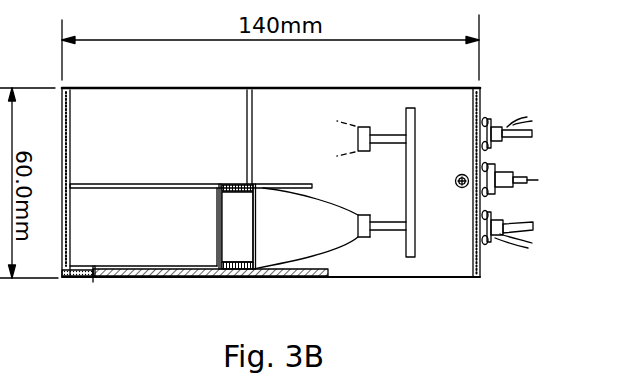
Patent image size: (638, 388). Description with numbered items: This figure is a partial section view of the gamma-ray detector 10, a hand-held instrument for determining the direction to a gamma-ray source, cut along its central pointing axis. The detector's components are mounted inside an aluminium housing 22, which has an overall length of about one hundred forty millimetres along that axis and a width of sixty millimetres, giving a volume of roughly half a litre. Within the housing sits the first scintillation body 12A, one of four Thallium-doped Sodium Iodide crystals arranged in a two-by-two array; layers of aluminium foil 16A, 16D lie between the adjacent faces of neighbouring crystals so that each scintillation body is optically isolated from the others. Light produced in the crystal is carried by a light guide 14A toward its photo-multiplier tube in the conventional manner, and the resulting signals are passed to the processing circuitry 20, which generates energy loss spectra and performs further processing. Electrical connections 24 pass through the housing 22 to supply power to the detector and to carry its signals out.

The gamma-ray detector 10 is at (394, 295).
The first scintillation body 12A is at (163, 248).
The light guide 14A is at (238, 248).
The layer of aluminium foil 16A is at (300, 248).
The layer of aluminium foil 16D is at (356, 127).
The processing circuitry 20 is at (415, 127).
The aluminium housing 22 is at (93, 282).
The electrical connections 24 is at (533, 132).